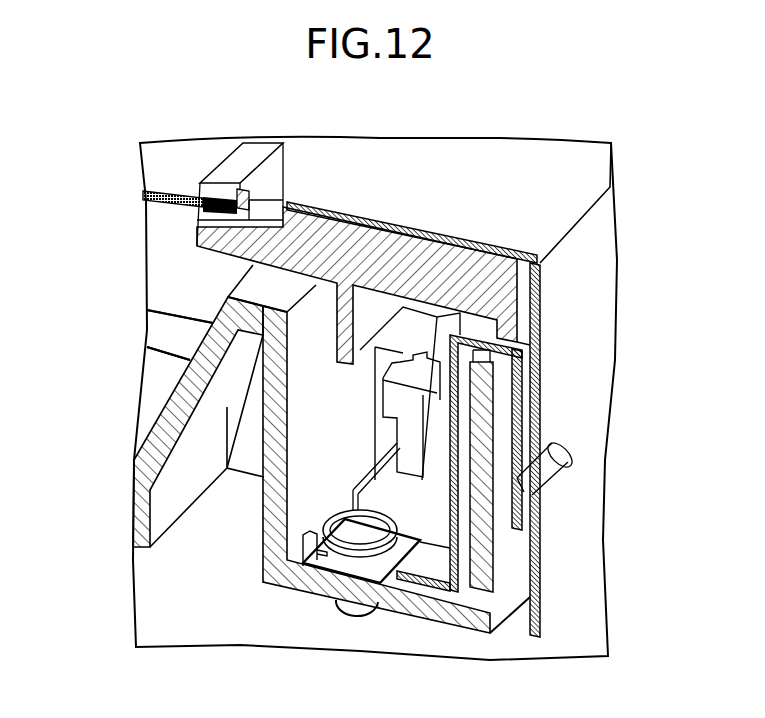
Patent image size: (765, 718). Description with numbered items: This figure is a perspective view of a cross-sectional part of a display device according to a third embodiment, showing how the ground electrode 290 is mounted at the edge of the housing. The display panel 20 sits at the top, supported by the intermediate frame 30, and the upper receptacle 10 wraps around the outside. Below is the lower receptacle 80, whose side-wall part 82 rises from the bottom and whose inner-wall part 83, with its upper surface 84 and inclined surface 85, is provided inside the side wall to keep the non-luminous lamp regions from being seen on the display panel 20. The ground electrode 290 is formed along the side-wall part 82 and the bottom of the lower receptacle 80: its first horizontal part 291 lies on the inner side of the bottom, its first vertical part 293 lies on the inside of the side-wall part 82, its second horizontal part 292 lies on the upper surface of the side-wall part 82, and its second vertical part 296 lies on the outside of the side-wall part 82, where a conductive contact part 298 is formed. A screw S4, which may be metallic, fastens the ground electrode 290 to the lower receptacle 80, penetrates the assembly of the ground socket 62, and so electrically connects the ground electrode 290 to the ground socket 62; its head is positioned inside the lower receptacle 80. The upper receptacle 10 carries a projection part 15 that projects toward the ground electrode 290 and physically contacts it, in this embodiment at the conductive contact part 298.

The upper receptacle 10 is at (590, 296).
The projection part 15 is at (568, 457).
The display panel 20 is at (176, 172).
The intermediate frame 30 is at (386, 258).
The ground socket 62 is at (337, 558).
The lower receptacle 80 is at (46, 300).
The side-wall part 82 is at (453, 423).
The inner-wall part 83 is at (84, 293).
The upper surface 84 is at (245, 286).
The inclined surface 85 is at (200, 340).
The ground electrode 290 is at (499, 450).
The first horizontal part 291 is at (525, 593).
The second horizontal part 292 is at (548, 462).
The first vertical part 293 is at (476, 580).
The second vertical part 296 is at (462, 543).
The conductive contact part 298 is at (523, 515).
The screw S4 is at (363, 537).